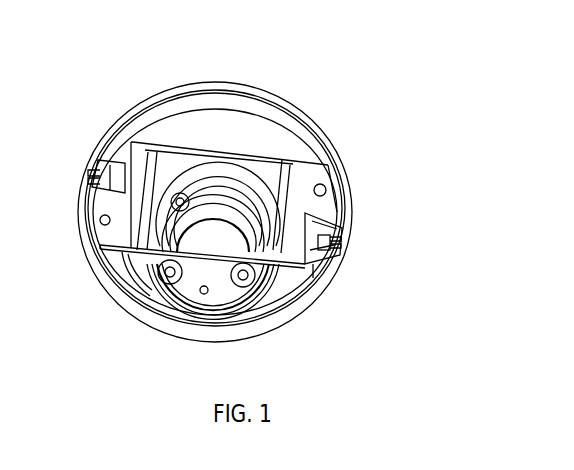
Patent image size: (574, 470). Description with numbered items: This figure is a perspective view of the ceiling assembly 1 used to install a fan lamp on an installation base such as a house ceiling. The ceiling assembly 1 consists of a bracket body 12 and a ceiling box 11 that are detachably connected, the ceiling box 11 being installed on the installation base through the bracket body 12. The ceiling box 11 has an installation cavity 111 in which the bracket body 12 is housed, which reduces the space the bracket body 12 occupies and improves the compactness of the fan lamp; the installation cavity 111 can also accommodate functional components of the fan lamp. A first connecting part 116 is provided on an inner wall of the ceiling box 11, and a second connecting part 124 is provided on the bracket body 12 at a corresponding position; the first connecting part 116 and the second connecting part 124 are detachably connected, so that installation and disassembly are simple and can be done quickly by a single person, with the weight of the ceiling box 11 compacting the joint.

The ceiling assembly 1 is at (78, 58).
The ceiling box 11 is at (306, 130).
The installation cavity 111 is at (238, 122).
The bracket body 12 is at (331, 212).
The first connecting part 116 is at (343, 231).
The second connecting part 124 is at (342, 252).